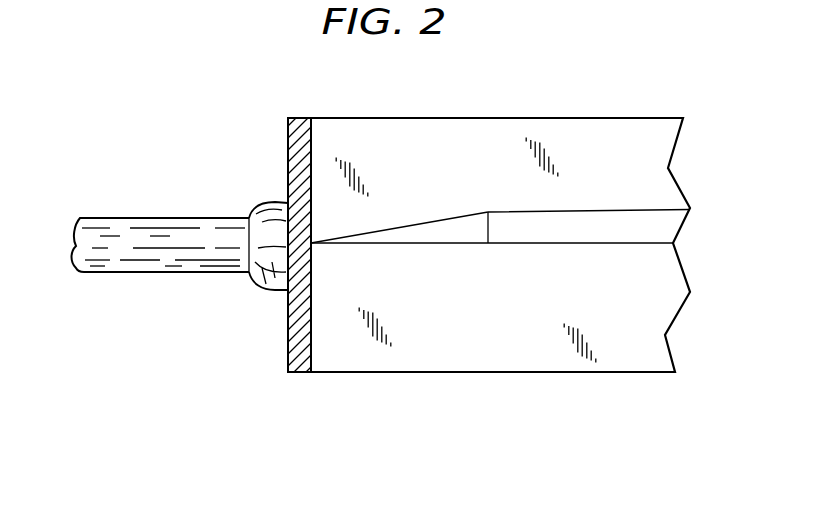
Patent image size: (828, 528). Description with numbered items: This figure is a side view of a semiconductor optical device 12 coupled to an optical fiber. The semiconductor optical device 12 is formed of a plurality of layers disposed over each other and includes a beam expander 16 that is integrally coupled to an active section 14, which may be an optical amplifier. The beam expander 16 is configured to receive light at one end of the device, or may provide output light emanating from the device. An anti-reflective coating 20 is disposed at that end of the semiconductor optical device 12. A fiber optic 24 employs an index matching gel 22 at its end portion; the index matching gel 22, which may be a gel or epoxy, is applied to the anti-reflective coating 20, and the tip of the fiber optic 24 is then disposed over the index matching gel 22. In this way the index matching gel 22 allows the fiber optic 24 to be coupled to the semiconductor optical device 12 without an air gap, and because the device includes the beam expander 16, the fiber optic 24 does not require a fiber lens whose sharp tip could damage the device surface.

The semiconductor optical device 12 is at (512, 355).
The active section 14 is at (570, 228).
The beam expander 16 is at (457, 236).
The anti-reflective coating 20 is at (296, 330).
The index matching gel 22 is at (266, 267).
The fiber optic 24 is at (175, 262).